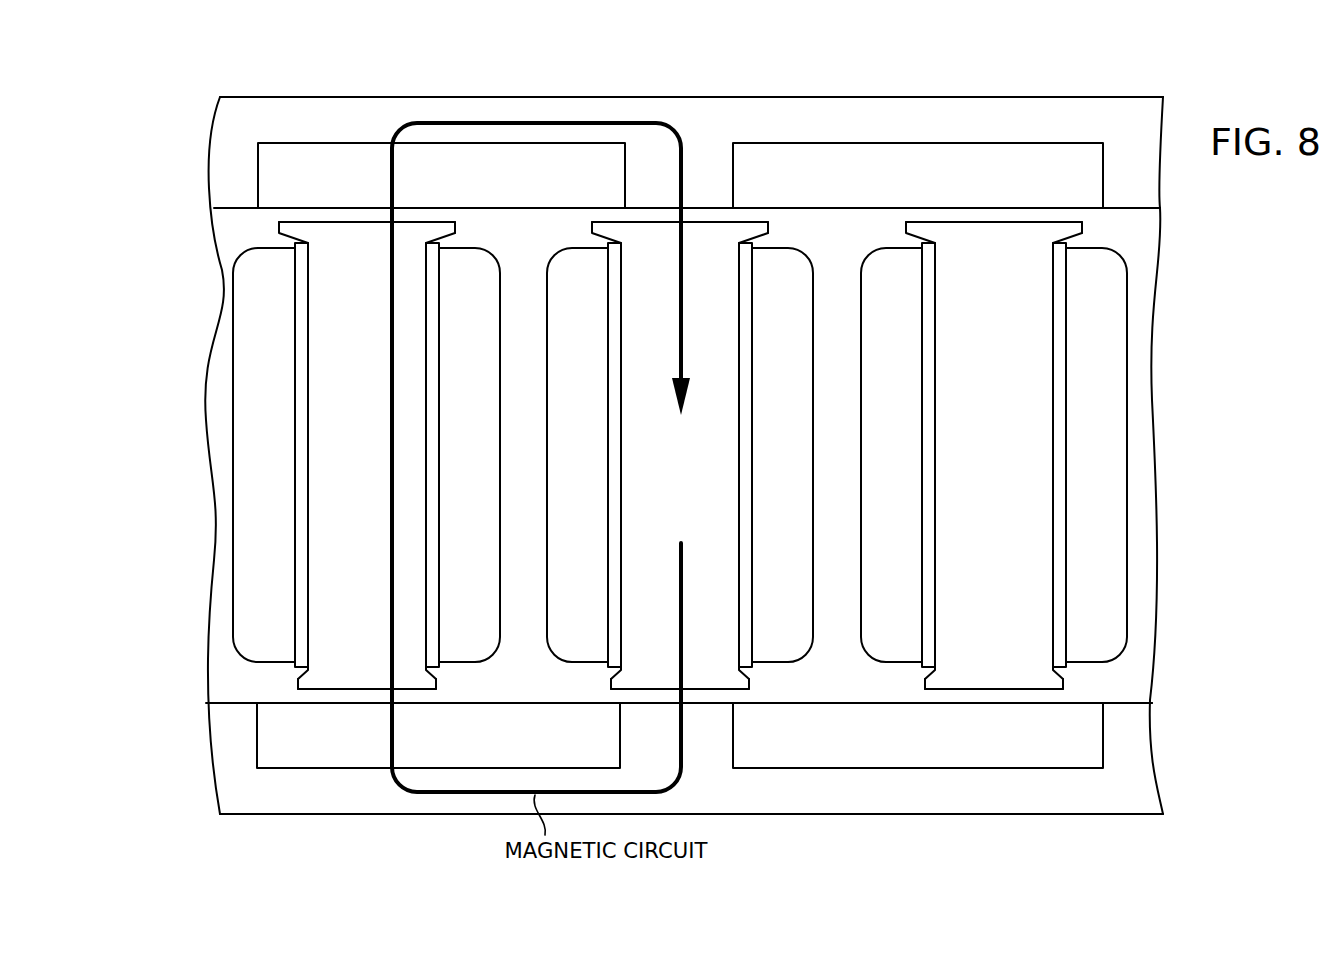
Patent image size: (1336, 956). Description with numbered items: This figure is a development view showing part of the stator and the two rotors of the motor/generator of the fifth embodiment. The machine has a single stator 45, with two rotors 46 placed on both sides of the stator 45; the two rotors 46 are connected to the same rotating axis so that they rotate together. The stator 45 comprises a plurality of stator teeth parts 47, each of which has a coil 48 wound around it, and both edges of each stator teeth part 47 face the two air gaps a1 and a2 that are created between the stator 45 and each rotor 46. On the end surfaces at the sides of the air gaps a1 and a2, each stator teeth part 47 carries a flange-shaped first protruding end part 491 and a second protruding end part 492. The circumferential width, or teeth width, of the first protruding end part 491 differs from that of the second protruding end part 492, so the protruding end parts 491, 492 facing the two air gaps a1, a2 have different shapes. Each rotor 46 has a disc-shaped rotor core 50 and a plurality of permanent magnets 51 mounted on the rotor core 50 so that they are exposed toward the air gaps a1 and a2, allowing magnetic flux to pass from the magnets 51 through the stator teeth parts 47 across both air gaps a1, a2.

The stator 45 is at (1187, 267).
The rotor 46 is at (950, 84).
The stator teeth part 47 is at (333, 543).
The coil 48 is at (245, 413).
The rotor core 50 is at (1162, 133).
The permanent magnet 51 is at (370, 155).
The first protruding end part 491 is at (352, 240).
The second protruding end part 492 is at (335, 673).
The air gap a1 is at (895, 217).
The air gap a2 is at (743, 696).